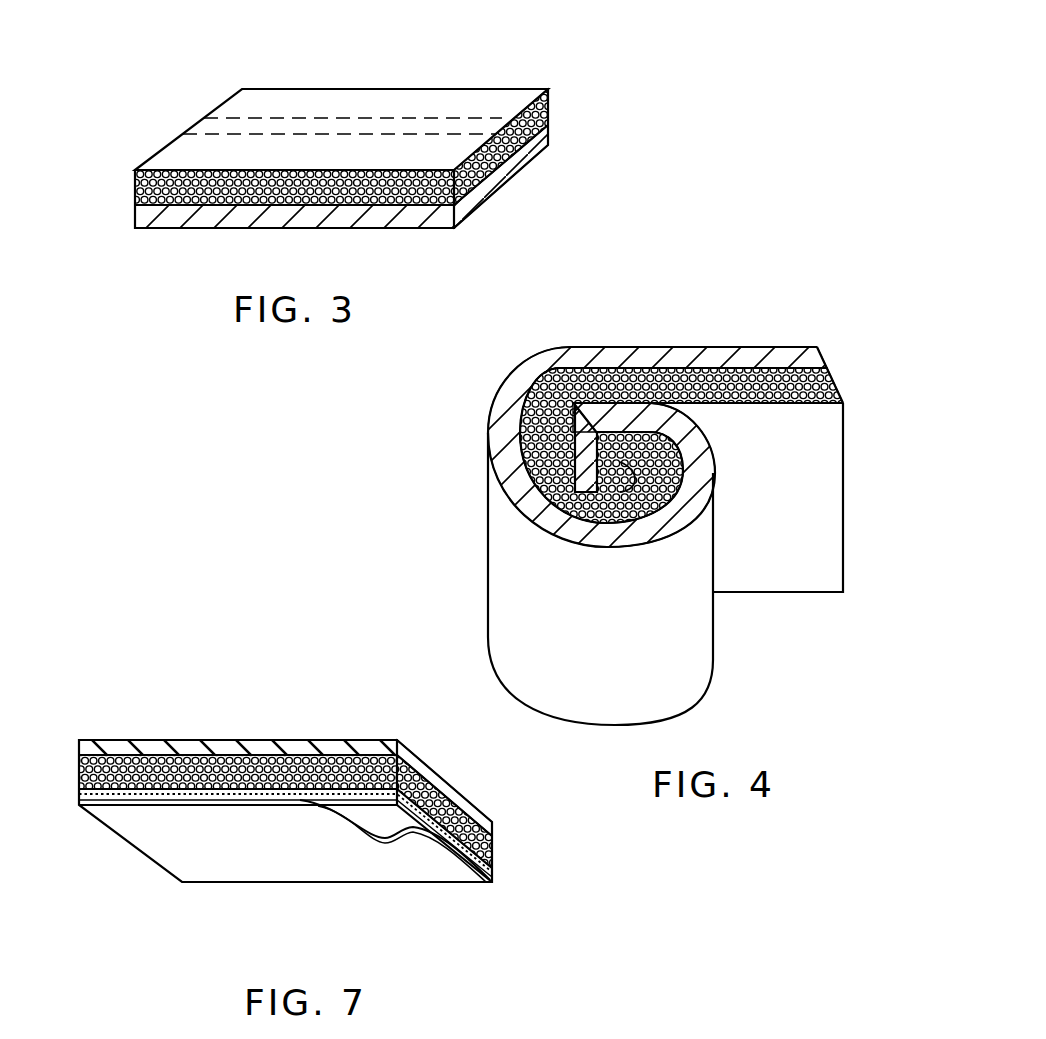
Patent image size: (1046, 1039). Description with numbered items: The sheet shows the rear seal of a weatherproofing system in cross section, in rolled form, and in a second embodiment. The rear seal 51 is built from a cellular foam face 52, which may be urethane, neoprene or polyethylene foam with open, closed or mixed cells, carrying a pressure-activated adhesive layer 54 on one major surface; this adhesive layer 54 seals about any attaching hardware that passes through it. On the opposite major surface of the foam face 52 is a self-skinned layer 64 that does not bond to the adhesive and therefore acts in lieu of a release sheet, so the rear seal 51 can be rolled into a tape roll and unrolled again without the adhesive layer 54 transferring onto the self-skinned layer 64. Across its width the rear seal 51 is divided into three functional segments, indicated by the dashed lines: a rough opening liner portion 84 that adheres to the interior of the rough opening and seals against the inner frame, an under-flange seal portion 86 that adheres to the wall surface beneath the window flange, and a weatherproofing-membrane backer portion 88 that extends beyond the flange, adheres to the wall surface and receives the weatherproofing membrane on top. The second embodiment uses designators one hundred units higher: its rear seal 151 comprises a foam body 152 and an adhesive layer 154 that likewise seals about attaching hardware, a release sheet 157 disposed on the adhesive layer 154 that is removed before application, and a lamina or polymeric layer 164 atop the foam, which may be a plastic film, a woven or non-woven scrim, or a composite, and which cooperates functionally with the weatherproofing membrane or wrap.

In FIG. 3, the rear seal 51 is at (457, 84).
In FIG. 4, the rear seal 51 is at (672, 330).
In FIG. 3, the foam face 52 is at (548, 118).
In FIG. 4, the foam face 52 is at (840, 383).
In FIG. 3, the adhesive layer 54 is at (550, 145).
In FIG. 4, the adhesive layer 54 is at (827, 360).
In FIG. 3, the self-skinned layer 64 is at (314, 162).
In FIG. 4, the self-skinned layer 64 is at (754, 487).
In FIG. 3, the rough opening liner portion 84 is at (170, 155).
In FIG. 3, the under-flange seal portion 86 is at (202, 128).
In FIG. 3, the weatherproofing-membrane backer portion 88 is at (238, 110).
In FIG. 7, the rear seal 151 is at (148, 862).
In FIG. 7, the foam body 152 is at (493, 843).
In FIG. 7, the adhesive layer 154 is at (493, 870).
In FIG. 7, the release sheet 157 is at (427, 867).
In FIG. 7, the polymeric layer 164 is at (357, 740).